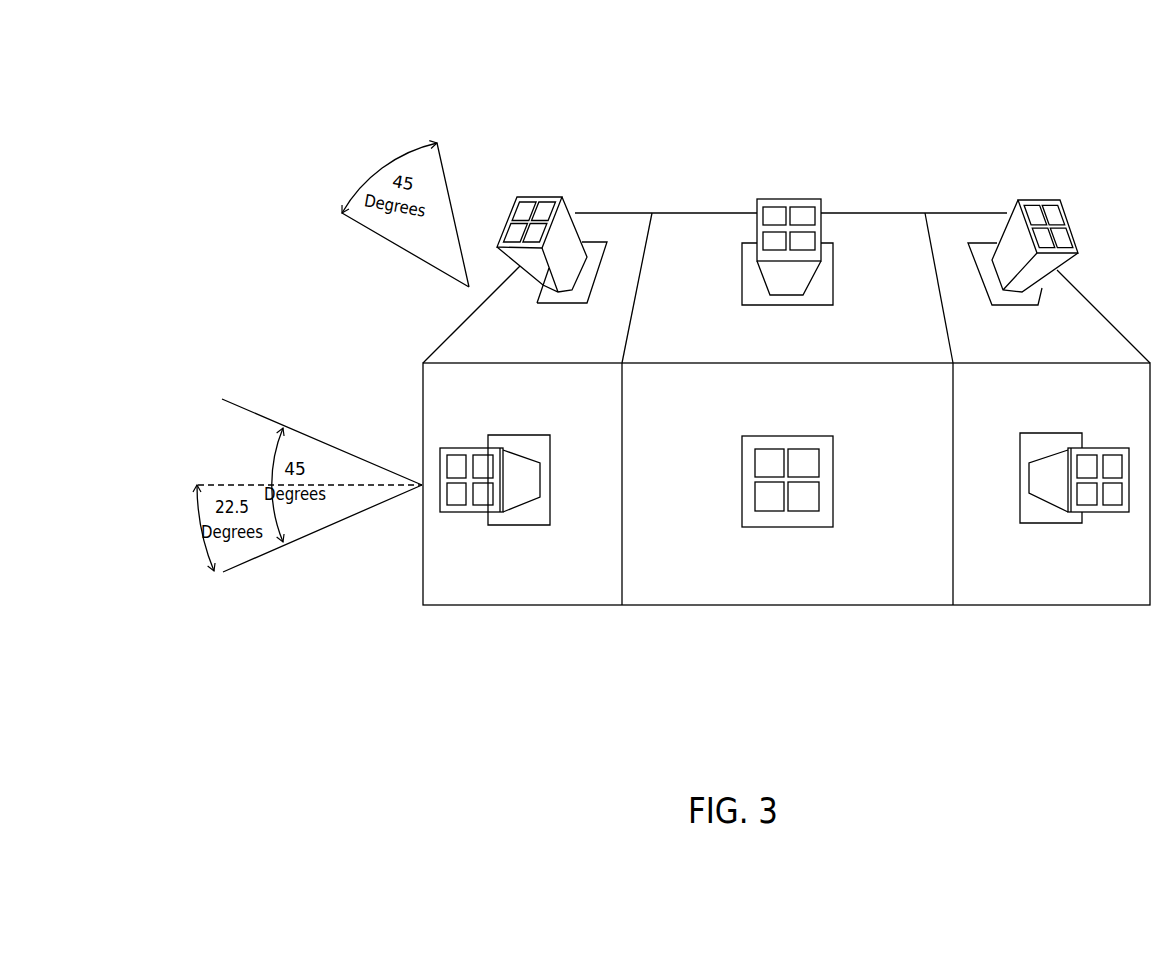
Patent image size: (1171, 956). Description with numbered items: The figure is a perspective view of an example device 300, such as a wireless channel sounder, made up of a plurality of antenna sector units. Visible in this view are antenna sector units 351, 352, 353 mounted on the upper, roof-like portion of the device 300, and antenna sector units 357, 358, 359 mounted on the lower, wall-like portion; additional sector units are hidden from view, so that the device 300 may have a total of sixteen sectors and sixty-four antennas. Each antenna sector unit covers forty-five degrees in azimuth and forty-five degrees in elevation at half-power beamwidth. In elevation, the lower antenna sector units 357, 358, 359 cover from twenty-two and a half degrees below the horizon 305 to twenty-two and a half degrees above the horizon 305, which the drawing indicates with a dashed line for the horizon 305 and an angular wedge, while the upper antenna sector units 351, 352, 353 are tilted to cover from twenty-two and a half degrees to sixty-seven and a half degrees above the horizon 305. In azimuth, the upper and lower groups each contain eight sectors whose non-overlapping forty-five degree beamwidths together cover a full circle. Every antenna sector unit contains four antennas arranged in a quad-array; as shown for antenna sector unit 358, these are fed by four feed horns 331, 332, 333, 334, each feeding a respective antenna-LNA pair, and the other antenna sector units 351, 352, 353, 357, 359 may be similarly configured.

The device 300 is at (156, 89).
The horizon 305 is at (220, 485).
The feed horn 331 is at (755, 458).
The feed horn 332 is at (755, 488).
The feed horn 333 is at (819, 465).
The feed horn 334 is at (819, 497).
The antenna sector unit 351 is at (548, 346).
The antenna sector unit 352 is at (798, 346).
The antenna sector unit 353 is at (1054, 346).
The antenna sector unit 357 is at (548, 582).
The antenna sector unit 358 is at (785, 509).
The antenna sector unit 359 is at (1055, 582).